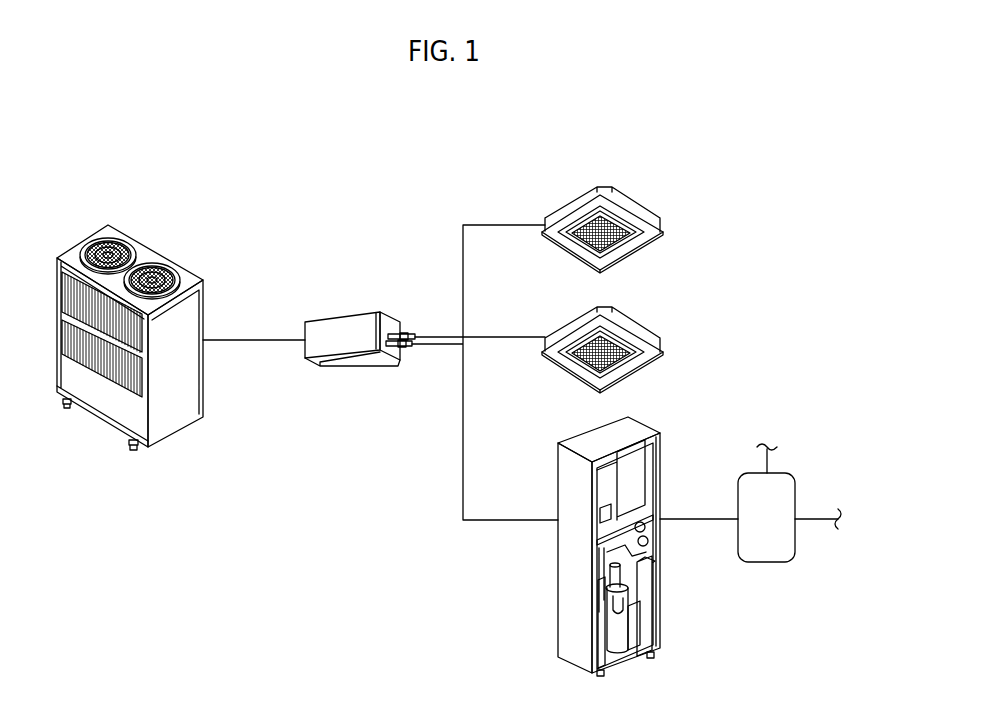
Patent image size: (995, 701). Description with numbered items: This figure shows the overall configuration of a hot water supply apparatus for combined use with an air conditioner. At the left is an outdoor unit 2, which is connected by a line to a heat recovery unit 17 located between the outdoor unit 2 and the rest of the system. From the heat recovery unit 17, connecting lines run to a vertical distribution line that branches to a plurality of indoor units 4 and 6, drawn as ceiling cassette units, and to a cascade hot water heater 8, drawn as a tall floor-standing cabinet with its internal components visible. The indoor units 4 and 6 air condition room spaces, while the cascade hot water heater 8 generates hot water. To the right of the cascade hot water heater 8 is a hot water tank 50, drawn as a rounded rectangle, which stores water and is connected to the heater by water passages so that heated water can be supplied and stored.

The outdoor unit 2 is at (176, 238).
The heat recovery unit 17 is at (384, 297).
The indoor unit 4 is at (655, 182).
The indoor unit 6 is at (659, 306).
The cascade hot water heater 8 is at (662, 413).
The hot water tank 50 is at (772, 562).